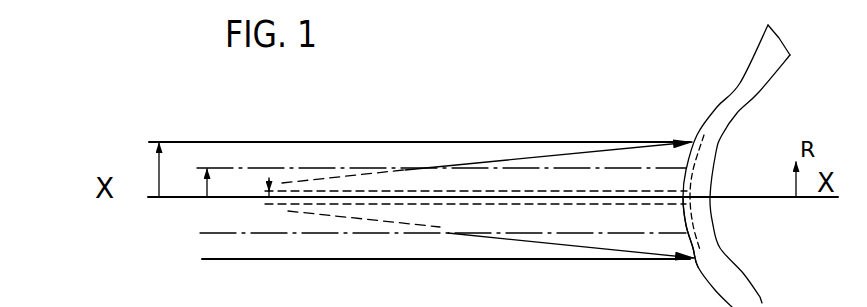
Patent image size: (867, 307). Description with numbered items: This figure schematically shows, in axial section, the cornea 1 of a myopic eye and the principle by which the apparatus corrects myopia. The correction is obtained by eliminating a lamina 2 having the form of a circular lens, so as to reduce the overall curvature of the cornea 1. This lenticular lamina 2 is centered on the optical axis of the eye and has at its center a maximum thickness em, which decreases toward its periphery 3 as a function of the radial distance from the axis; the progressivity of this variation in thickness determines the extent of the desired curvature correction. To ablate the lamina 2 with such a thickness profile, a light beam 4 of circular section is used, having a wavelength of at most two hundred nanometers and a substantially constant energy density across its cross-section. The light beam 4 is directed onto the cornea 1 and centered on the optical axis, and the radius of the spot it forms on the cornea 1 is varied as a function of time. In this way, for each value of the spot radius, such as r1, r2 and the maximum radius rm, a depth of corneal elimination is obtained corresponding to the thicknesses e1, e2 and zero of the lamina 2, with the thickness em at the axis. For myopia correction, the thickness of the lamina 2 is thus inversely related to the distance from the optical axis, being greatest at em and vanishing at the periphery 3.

The cornea 1 is at (718, 115).
The lamina 2 is at (687, 180).
The periphery 3 is at (692, 267).
The light beam 4 is at (493, 160).
The lamina thickness at radius r1 e1 is at (697, 191).
The lamina thickness at radius r2 e2 is at (696, 165).
The maximum thickness em is at (687, 201).
The spot radius r1 is at (253, 187).
The spot radius r2 is at (192, 183).
The maximum spot radius rm is at (137, 170).